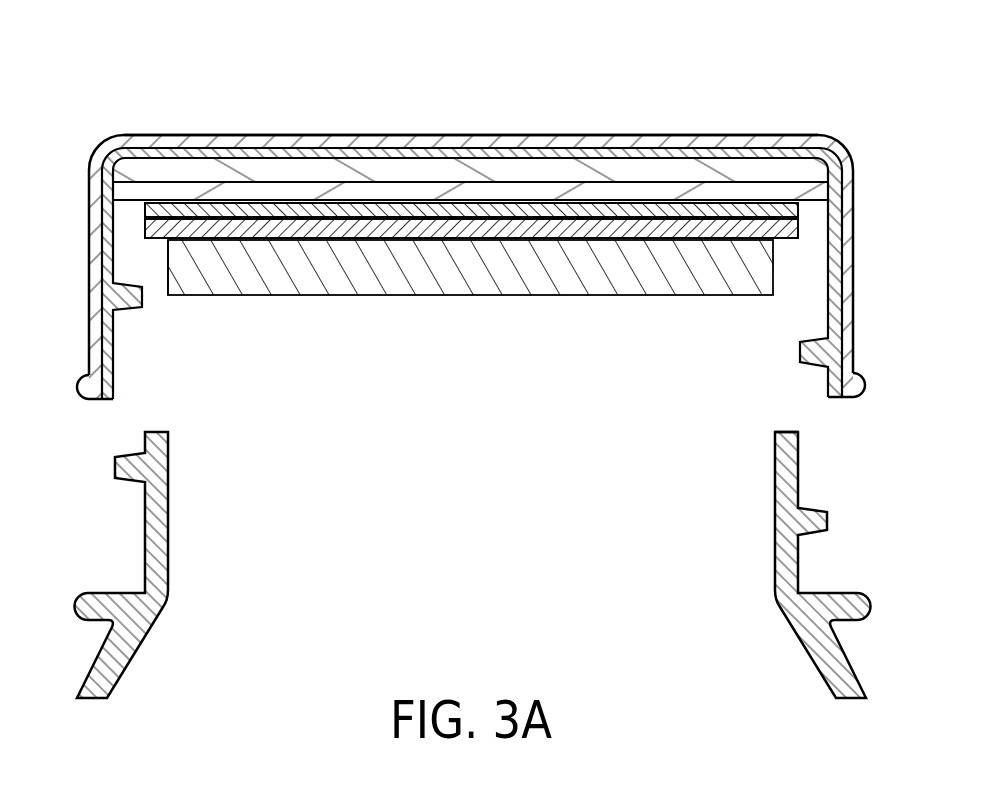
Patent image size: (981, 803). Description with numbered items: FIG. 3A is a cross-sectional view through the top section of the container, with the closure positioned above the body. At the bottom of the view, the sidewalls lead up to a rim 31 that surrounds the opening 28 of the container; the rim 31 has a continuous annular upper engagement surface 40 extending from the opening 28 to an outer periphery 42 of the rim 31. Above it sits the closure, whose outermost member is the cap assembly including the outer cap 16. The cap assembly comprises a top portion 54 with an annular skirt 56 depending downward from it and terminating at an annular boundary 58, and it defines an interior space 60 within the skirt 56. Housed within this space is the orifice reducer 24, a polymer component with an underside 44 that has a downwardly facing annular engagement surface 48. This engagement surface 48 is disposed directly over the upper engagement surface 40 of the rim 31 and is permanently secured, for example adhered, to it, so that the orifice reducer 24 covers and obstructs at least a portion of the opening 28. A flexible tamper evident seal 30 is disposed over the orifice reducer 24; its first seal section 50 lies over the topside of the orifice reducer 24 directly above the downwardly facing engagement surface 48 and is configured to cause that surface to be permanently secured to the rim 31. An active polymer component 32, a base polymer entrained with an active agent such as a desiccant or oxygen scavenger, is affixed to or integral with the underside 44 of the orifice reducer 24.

The outer cap 16 is at (847, 200).
The orifice reducer 24 is at (168, 227).
The opening 28 is at (335, 424).
The flexible tamper evident seal 30 is at (362, 210).
The rim 31 is at (790, 432).
The active polymer component 32 is at (597, 277).
The upper engagement surface 40 is at (783, 430).
The outer periphery 42 is at (145, 433).
The underside 44 is at (165, 240).
The downwardly facing annular engagement surface 48 is at (157, 242).
The first seal section 50 is at (163, 212).
The top portion 54 is at (738, 140).
The annular skirt 56 is at (843, 253).
The annular boundary 58 is at (832, 399).
The interior space 60 is at (133, 222).